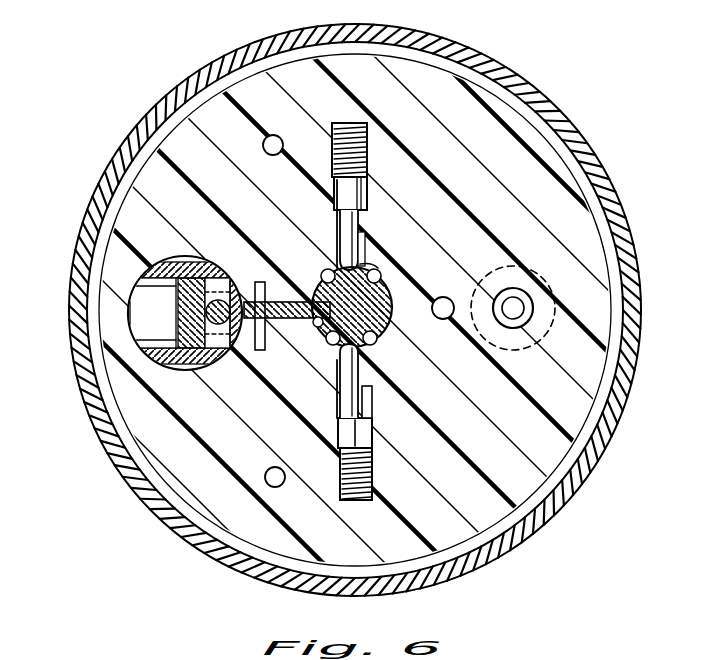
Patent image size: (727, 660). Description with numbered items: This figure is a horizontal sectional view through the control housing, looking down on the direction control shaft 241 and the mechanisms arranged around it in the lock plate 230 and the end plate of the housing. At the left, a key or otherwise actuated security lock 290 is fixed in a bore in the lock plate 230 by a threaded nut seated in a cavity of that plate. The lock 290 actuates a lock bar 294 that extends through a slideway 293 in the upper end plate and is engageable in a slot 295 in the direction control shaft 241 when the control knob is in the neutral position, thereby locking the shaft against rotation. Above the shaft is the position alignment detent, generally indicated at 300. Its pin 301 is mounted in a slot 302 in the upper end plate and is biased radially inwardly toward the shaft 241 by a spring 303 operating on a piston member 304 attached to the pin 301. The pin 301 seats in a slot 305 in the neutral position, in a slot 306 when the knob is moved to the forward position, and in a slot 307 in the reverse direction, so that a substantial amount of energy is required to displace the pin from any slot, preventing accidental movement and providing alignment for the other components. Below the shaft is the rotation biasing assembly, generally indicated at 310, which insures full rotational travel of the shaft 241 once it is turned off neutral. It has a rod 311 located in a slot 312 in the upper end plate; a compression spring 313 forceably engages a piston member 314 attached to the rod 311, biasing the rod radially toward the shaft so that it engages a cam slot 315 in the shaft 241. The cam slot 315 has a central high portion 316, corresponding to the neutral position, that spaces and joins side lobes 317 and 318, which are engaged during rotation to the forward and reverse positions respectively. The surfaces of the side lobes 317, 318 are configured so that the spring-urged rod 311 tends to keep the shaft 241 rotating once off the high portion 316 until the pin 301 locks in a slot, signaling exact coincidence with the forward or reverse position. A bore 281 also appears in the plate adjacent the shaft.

The lock plate 230 is at (588, 148).
The direction control shaft 241 is at (449, 319).
The pivot 281 is at (525, 305).
The security lock 290 is at (138, 296).
The slideway 293 is at (322, 300).
The lock bar 294 is at (258, 282).
The slot 295 is at (314, 326).
The position alignment detent 300 is at (394, 262).
The pin 301 is at (369, 214).
The slot 302 is at (336, 206).
The spring 303 is at (368, 136).
The piston member 304 is at (368, 186).
The slot 305 is at (366, 246).
The slot 306 is at (324, 270).
The slot 307 is at (381, 277).
The rotation biasing assembly 310 is at (373, 422).
The rod 311 is at (374, 396).
The slot 312 is at (338, 412).
The compression spring 313 is at (373, 478).
The piston member 314 is at (352, 436).
The cam slot 315 is at (328, 345).
The central high portion 316 is at (330, 384).
The side lobe 317 is at (384, 338).
The side lobe 318 is at (352, 350).